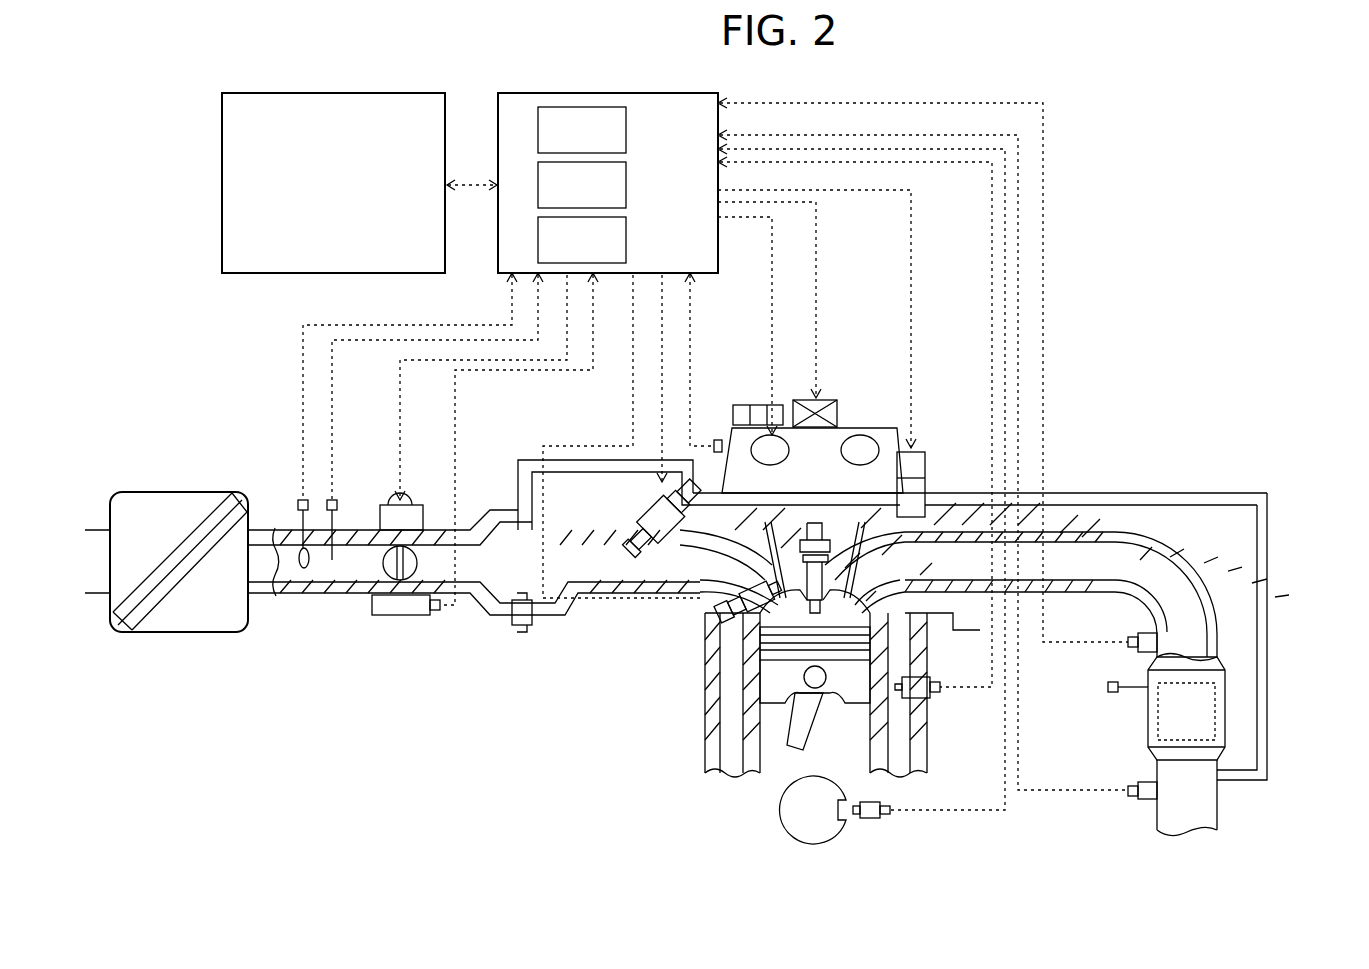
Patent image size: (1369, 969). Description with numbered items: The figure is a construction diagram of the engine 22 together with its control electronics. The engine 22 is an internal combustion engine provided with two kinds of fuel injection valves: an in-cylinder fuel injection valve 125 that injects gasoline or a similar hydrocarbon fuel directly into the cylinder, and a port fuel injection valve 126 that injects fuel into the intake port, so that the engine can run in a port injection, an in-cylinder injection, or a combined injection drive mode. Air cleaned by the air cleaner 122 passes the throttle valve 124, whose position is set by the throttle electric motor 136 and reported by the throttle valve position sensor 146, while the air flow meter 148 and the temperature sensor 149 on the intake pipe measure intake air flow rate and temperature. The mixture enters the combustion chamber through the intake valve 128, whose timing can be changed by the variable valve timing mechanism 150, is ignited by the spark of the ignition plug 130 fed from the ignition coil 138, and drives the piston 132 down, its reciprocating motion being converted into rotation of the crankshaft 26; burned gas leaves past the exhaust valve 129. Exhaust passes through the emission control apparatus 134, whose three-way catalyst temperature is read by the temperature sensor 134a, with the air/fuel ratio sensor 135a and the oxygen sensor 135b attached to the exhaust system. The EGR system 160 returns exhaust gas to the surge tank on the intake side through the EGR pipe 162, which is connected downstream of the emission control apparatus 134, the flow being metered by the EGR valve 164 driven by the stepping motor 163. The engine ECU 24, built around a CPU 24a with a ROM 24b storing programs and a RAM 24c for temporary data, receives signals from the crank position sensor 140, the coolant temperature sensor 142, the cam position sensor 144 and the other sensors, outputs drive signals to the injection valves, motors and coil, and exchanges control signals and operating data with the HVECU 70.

The engine 22 is at (831, 291).
The engine ECU 24 is at (609, 92).
The CPU 24a is at (627, 129).
The ROM 24b is at (627, 184).
The RAM 24c is at (627, 239).
The crankshaft 26 is at (781, 811).
The HVECU 70 is at (334, 92).
The air cleaner 122 is at (180, 492).
The throttle valve 124 is at (385, 568).
The in-cylinder fuel injection valve 125 is at (720, 602).
The port fuel injection valve 126 is at (640, 497).
The intake valve 128 is at (772, 598).
The exhaust valve 129 is at (866, 592).
The ignition plug 130 is at (815, 598).
The piston 132 is at (775, 686).
The emission control apparatus 134 is at (1148, 700).
The temperature sensor 134a is at (1158, 725).
The air/fuel ratio sensor 135a is at (1150, 640).
The oxygen sensor 135b is at (1137, 798).
The throttle electric motor 136 is at (410, 490).
The ignition coil 138 is at (825, 398).
The crank position sensor 140 is at (872, 820).
The coolant temperature sensor 142 is at (925, 677).
The cam position sensor 144 is at (720, 440).
The throttle valve position sensor 146 is at (390, 617).
The air flow meter 148 is at (298, 498).
The temperature sensor 149 is at (337, 498).
The variable valve timing mechanism 150 is at (855, 426).
The EGR system 160 is at (1190, 457).
The EGR pipe 162 is at (1268, 632).
The stepping motor 163 is at (922, 452).
The EGR valve 164 is at (926, 495).